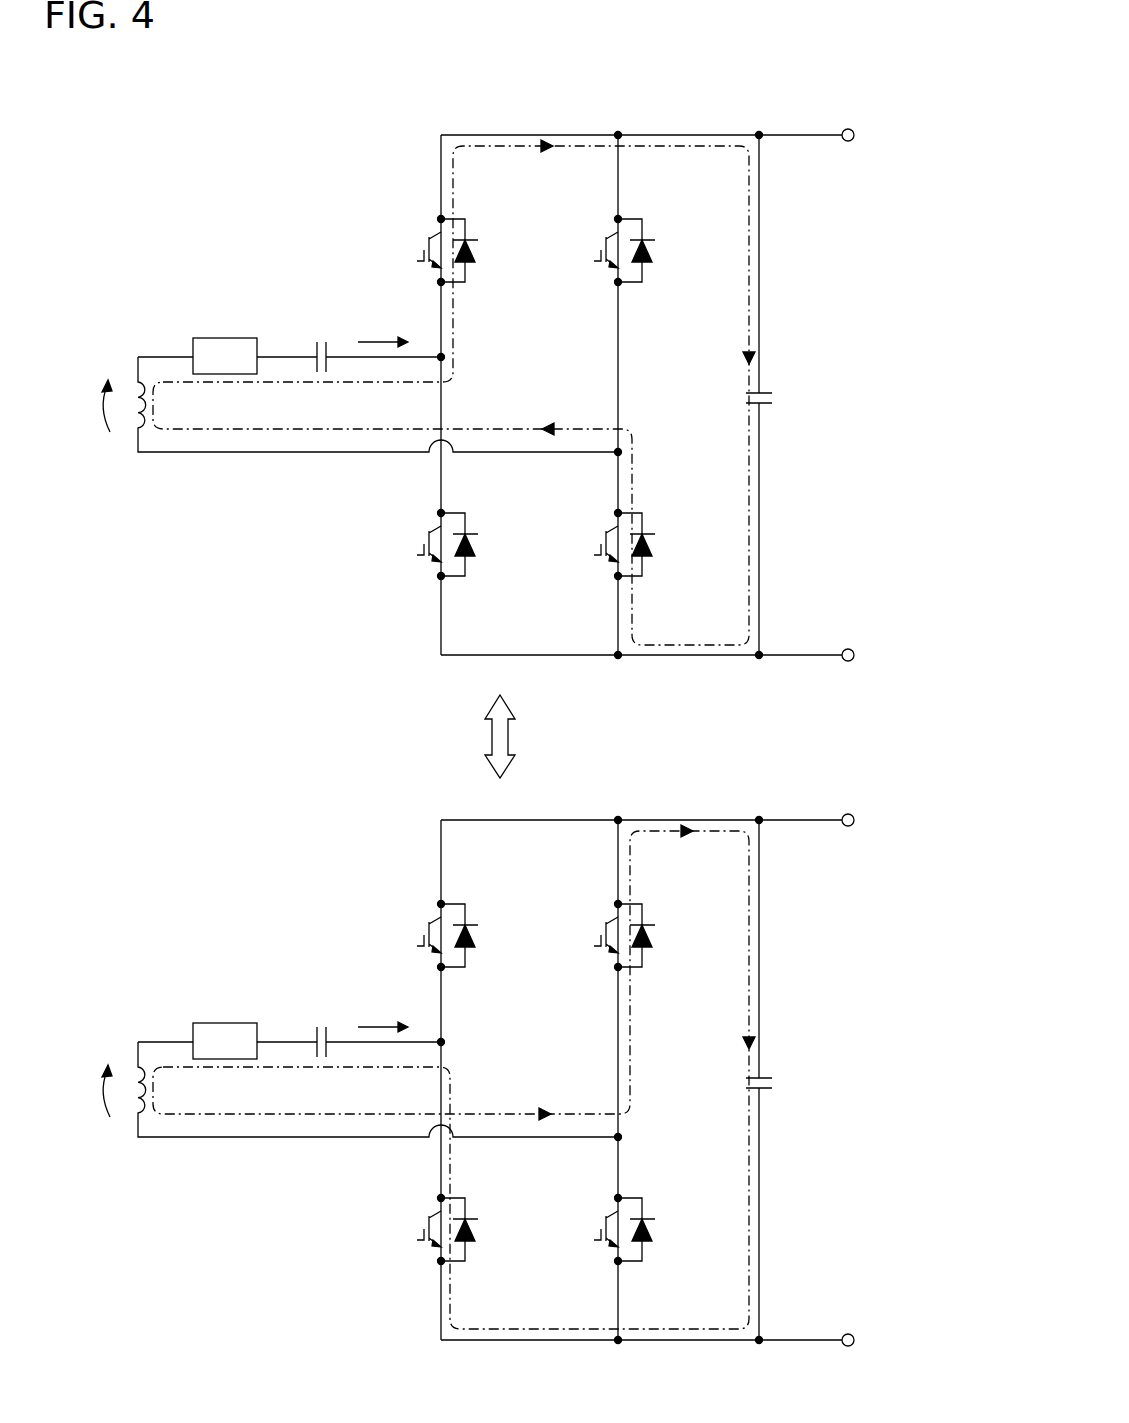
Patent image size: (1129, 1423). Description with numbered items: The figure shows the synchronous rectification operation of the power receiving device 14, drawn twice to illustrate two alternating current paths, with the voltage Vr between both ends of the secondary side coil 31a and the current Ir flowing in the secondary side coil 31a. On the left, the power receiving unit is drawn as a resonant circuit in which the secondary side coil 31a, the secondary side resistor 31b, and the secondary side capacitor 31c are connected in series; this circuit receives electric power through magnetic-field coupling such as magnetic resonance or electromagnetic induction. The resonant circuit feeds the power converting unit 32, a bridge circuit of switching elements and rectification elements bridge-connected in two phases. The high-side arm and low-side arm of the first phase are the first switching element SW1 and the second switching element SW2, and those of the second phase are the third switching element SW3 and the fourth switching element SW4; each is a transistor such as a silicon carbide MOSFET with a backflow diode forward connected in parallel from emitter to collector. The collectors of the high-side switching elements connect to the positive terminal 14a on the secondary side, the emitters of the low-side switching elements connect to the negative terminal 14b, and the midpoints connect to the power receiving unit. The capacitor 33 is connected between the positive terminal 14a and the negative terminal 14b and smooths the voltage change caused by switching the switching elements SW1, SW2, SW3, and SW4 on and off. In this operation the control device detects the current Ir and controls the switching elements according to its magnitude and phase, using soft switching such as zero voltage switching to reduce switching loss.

The power receiving device 14 is at (878, 124).
The positive terminal 14a is at (761, 133).
The negative terminal 14b is at (762, 653).
The secondary side coil 31a is at (130, 382).
The secondary side resistor 31b is at (228, 337).
The secondary side capacitor 31c is at (333, 341).
The power converting unit 32 is at (517, 134).
The capacitor 33 is at (773, 393).
The first switching element SW1 is at (463, 219).
The second switching element SW2 is at (463, 513).
The third switching element SW3 is at (639, 219).
The fourth switching element SW4 is at (639, 513).